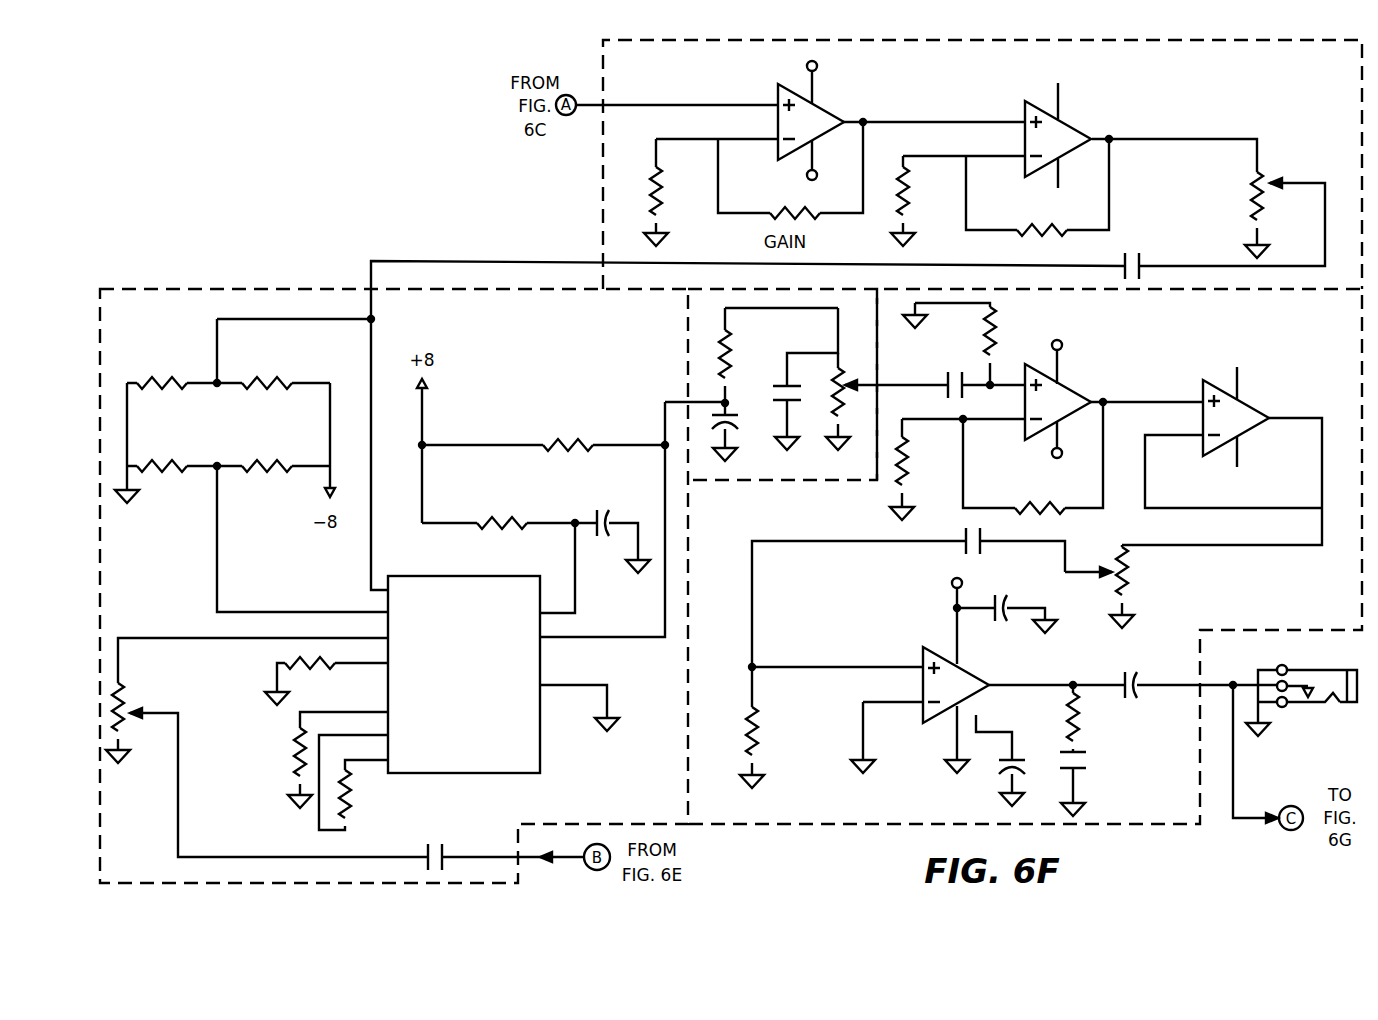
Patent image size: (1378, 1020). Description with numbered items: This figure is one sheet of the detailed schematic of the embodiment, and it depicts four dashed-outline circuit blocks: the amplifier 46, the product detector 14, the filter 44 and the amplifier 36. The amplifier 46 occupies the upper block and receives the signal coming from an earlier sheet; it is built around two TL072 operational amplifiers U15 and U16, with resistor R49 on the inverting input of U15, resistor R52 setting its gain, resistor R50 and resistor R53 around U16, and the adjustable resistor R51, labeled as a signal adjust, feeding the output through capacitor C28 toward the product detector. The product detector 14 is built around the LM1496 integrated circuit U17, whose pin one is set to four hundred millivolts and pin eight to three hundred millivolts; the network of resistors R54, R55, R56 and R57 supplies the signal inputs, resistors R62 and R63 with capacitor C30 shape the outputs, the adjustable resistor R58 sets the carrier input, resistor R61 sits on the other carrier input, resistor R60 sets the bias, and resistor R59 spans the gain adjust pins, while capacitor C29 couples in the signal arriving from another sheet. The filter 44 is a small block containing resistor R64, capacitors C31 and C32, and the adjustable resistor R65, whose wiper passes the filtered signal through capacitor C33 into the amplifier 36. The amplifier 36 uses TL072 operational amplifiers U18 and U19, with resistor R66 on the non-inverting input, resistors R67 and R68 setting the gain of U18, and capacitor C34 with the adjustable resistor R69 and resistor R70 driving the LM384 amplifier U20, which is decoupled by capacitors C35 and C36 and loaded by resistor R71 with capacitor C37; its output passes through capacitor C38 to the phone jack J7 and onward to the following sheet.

The product detector 14 is at (315, 289).
The amplifier 36 is at (783, 825).
The filter 44 is at (705, 358).
The amplifier 46 is at (603, 197).
The TL072 operational amplifier U15 is at (812, 122).
The TL072 operational amplifier U16 is at (1058, 134).
The LM1496 integrated circuit U17 is at (492, 668).
The TL072 operational amplifier U18 is at (1058, 402).
The TL072 operational amplifier U19 is at (1238, 412).
The LM384 amplifier U20 is at (931, 674).
The resistor R49 is at (635, 192).
The resistor R50 is at (958, 201).
The adjustable resistor R51 is at (1208, 202).
The resistor R52 is at (790, 170).
The resistor R53 is at (1039, 186).
The resistor R54 is at (282, 368).
The resistor R55 is at (162, 368).
The resistor R56 is at (282, 450).
The resistor R57 is at (162, 450).
The adjustable resistor R58 is at (267, 747).
The resistor R59 is at (354, 782).
The resistor R60 is at (319, 760).
The resistor R61 is at (326, 681).
The resistor R62 is at (509, 549).
The resistor R63 is at (545, 429).
The resistor R64 is at (778, 361).
The adjustable resistor R65 is at (871, 401).
The resistor R66 is at (969, 341).
The resistor R67 is at (957, 468).
The resistor R68 is at (1034, 456).
The adjustable resistor R69 is at (1118, 586).
The resistor R70 is at (831, 727).
The resistor R71 is at (1092, 718).
The capacitor C28 is at (1130, 241).
The capacitor C29 is at (506, 849).
The capacitor C30 is at (621, 530).
The capacitor C31 is at (805, 379).
The capacitor C32 is at (745, 435).
The capacitor C33 is at (980, 371).
The capacitor C34 is at (907, 594).
The capacitor C35 is at (1007, 602).
The capacitor C36 is at (1025, 771).
The capacitor C37 is at (1085, 784).
The capacitor C38 is at (1201, 677).
The phone jack J7 is at (1301, 703).